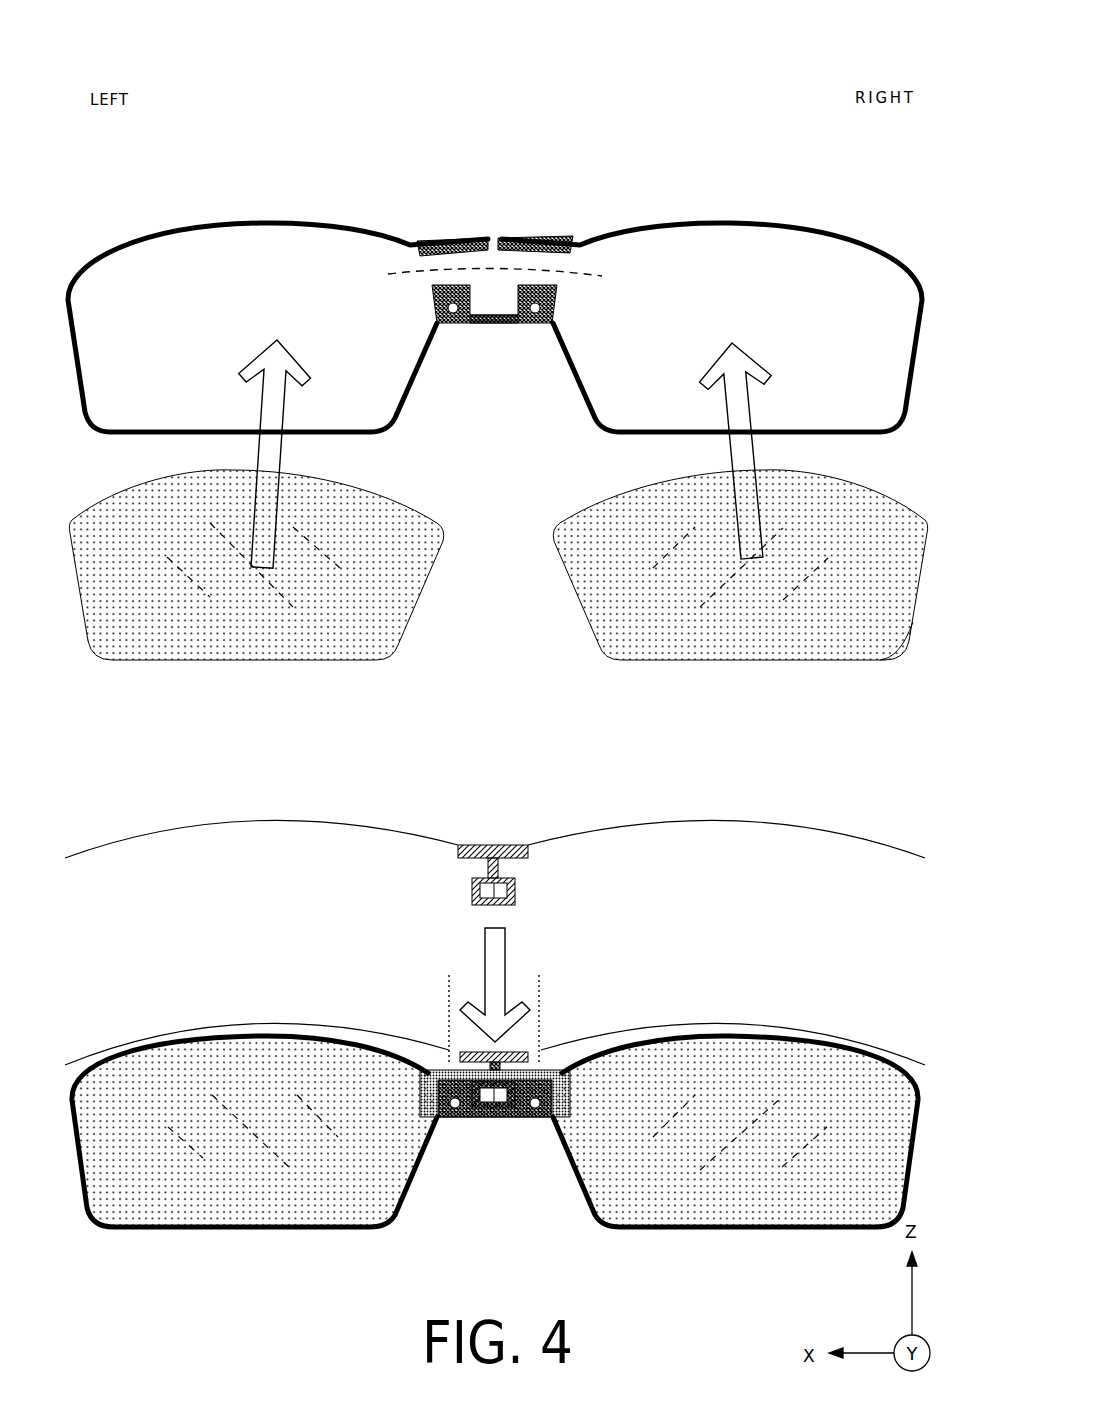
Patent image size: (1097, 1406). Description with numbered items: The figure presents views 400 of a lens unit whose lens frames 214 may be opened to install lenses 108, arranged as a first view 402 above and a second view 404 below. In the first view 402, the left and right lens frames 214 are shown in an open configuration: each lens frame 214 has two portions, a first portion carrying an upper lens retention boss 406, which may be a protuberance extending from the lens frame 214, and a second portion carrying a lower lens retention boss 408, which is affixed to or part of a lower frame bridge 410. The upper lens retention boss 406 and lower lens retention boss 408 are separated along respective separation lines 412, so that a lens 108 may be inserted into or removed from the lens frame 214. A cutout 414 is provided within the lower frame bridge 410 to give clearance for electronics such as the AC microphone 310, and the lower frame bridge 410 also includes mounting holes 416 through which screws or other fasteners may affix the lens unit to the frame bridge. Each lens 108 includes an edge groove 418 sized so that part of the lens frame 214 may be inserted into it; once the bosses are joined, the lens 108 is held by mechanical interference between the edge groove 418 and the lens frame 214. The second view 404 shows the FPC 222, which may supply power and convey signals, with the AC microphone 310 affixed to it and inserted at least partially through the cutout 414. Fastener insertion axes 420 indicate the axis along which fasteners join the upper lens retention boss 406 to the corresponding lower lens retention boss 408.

The views 400 is at (780, 45).
The first view 402 is at (230, 78).
The second view 404 is at (242, 785).
The lens 108 is at (248, 625).
The lens frame 214 is at (505, 690).
The FPC 222 is at (397, 825).
The AC microphone 310 is at (505, 890).
The upper lens retention boss 406 is at (547, 237).
The lower lens retention boss 408 is at (545, 284).
The lower frame bridge 410 is at (487, 334).
The separation line 412 is at (403, 270).
The cutout 414 is at (492, 283).
The mounting holes 416 is at (453, 314).
The edge groove 418 is at (668, 667).
The fastener insertion axes 420 is at (448, 998).